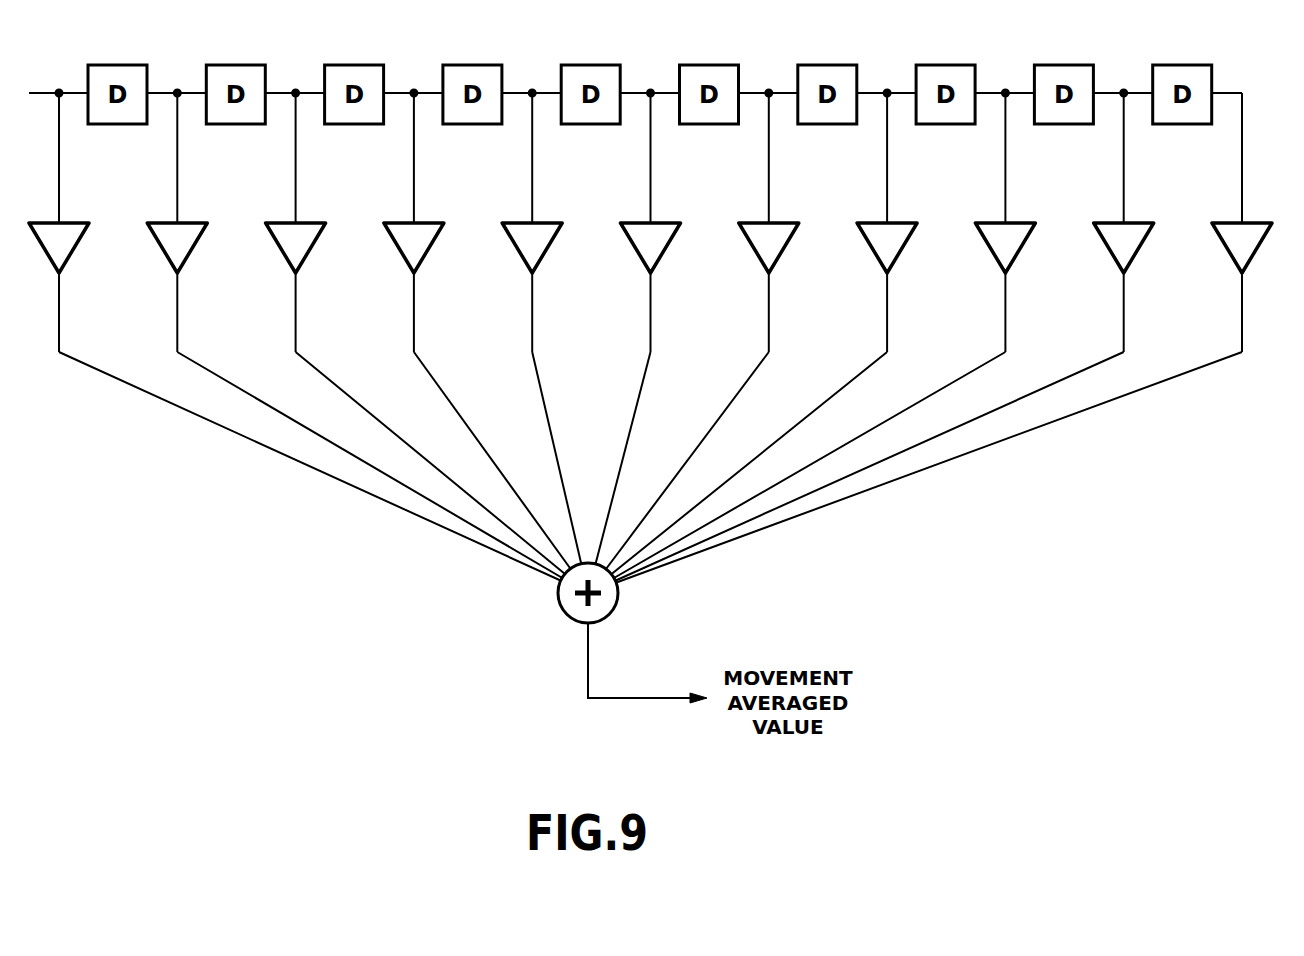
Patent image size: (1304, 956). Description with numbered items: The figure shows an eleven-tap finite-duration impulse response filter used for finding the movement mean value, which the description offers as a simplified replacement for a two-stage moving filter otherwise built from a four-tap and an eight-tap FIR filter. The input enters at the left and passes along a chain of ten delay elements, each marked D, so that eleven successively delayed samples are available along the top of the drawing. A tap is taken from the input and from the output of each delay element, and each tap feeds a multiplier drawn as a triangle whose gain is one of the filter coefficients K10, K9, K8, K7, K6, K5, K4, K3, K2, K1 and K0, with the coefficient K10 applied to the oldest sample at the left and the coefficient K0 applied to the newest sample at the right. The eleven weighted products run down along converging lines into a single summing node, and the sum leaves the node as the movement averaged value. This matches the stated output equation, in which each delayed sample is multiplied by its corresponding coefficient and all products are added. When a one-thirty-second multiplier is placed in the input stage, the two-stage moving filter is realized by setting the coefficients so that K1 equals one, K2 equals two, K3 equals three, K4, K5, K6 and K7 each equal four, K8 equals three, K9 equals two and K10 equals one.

The filter coefficient K10 is at (308, 342).
The filter coefficient K9 is at (367, 342).
The filter coefficient K8 is at (427, 342).
The filter coefficient K7 is at (486, 342).
The filter coefficient K6 is at (545, 342).
The filter coefficient K5 is at (640, 342).
The filter coefficient K4 is at (699, 342).
The filter coefficient K3 is at (758, 342).
The filter coefficient K2 is at (817, 342).
The filter coefficient K1 is at (876, 342).
The filter coefficient K0 is at (935, 343).